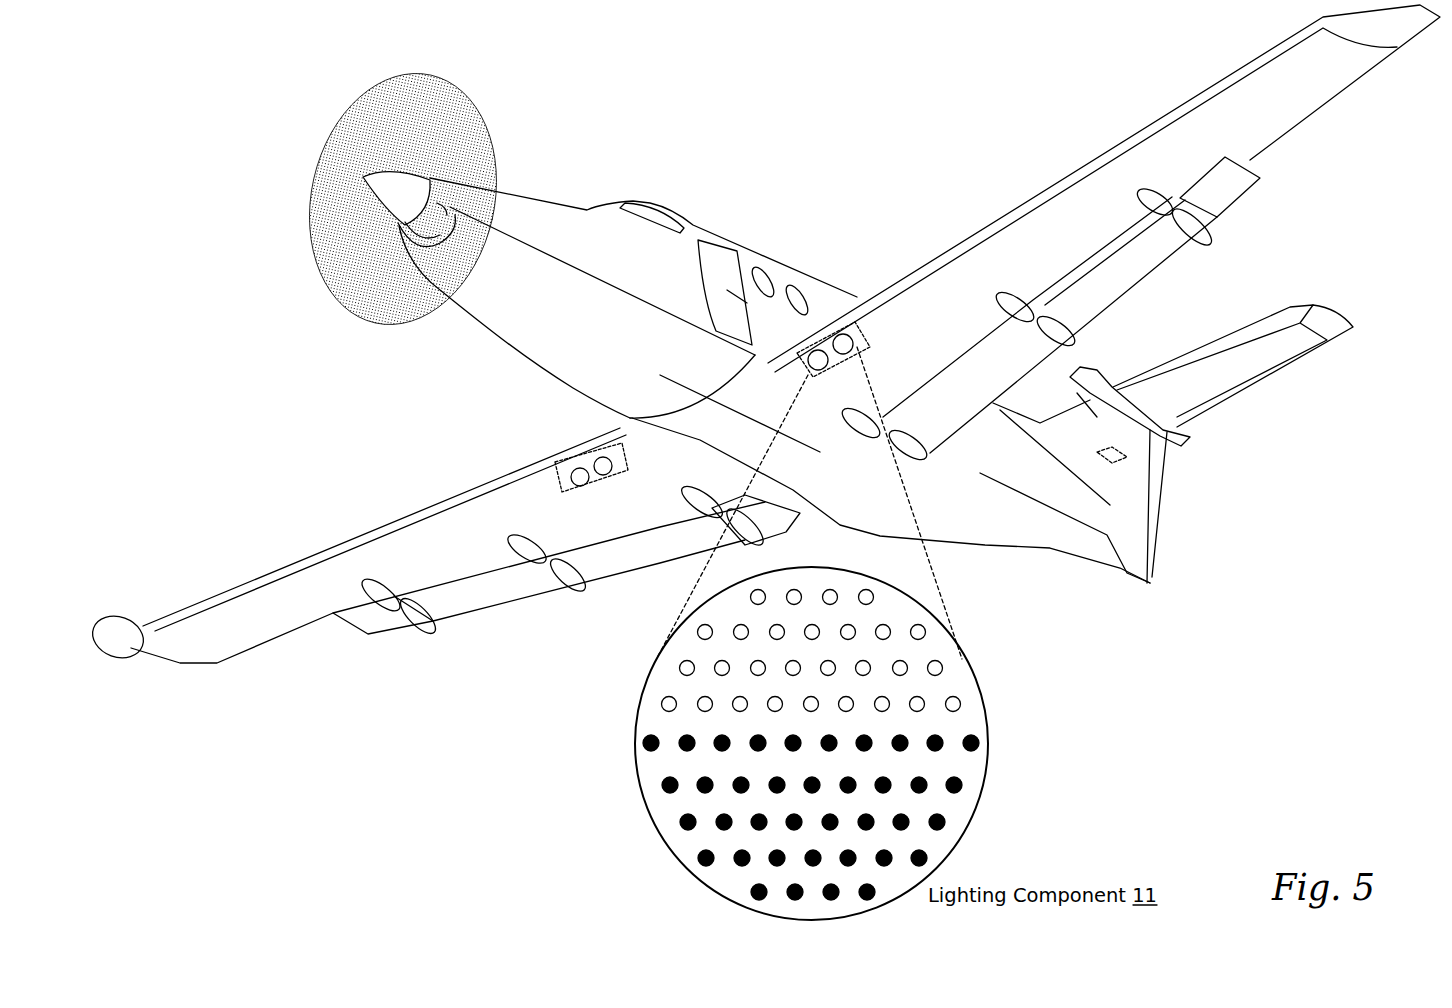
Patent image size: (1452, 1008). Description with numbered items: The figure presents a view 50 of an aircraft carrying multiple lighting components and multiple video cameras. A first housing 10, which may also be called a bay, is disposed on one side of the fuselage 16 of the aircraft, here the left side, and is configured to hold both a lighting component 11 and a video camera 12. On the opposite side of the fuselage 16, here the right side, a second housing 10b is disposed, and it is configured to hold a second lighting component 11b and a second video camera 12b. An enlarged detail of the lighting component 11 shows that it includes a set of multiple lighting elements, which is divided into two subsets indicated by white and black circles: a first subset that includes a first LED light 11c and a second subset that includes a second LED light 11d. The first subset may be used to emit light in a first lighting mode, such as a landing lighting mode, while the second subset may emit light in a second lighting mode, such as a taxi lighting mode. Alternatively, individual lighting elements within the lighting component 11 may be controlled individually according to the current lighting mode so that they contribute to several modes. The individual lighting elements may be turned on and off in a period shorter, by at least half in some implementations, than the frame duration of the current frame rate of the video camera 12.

The view 50 is at (270, 90).
The fuselage 16 is at (535, 352).
The housing 10 is at (907, 331).
The lighting component 11 is at (845, 335).
The video camera 12 is at (817, 356).
The second housing 10b is at (552, 472).
The second lighting component 11b is at (629, 519).
The second video camera 12b is at (659, 498).
The first LED light 11c is at (664, 708).
The second LED light 11d is at (664, 788).